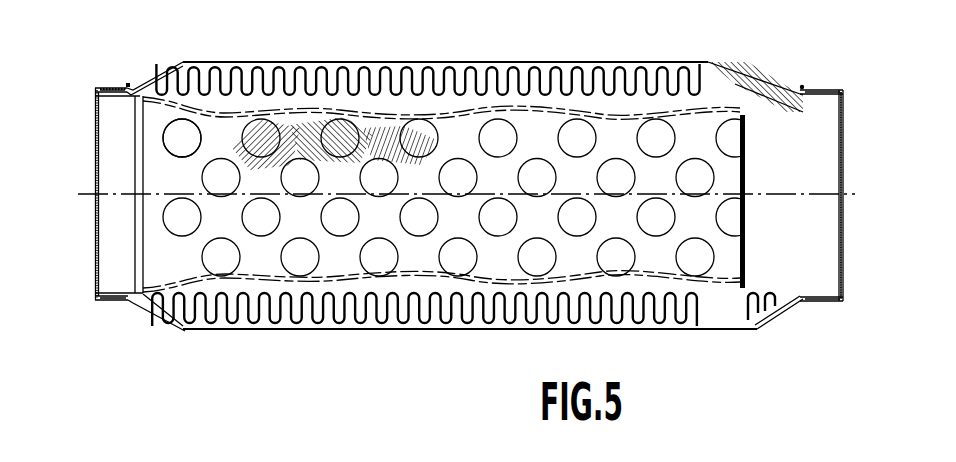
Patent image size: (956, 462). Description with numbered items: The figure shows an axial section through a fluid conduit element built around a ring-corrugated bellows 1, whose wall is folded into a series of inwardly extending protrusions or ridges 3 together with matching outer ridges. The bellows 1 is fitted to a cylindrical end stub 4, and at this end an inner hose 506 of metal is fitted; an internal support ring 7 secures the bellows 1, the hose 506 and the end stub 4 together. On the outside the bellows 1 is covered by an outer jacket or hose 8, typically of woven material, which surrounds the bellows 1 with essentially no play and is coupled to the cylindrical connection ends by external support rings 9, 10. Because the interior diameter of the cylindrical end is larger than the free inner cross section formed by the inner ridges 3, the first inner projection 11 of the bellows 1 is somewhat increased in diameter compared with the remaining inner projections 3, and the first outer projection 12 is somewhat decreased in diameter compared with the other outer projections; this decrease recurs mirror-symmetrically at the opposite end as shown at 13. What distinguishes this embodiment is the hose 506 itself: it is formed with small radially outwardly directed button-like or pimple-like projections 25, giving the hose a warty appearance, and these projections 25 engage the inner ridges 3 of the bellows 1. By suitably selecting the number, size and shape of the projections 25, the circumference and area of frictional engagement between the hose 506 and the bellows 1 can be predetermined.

The ring-corrugated bellows 1 is at (530, 85).
The inner protrusions 3 is at (325, 97).
The cylindrical end stub 4 is at (95, 95).
The internal support ring 7 is at (113, 240).
The outer jacket 8 is at (757, 72).
The external support ring 9 is at (112, 85).
The external support ring 10 is at (822, 88).
The first inner projection 11 is at (148, 97).
The first outer projection 12 is at (163, 308).
The decreased-diameter outer projection 13 is at (770, 320).
The button-like projections 25 is at (178, 136).
The hose 506 is at (460, 137).